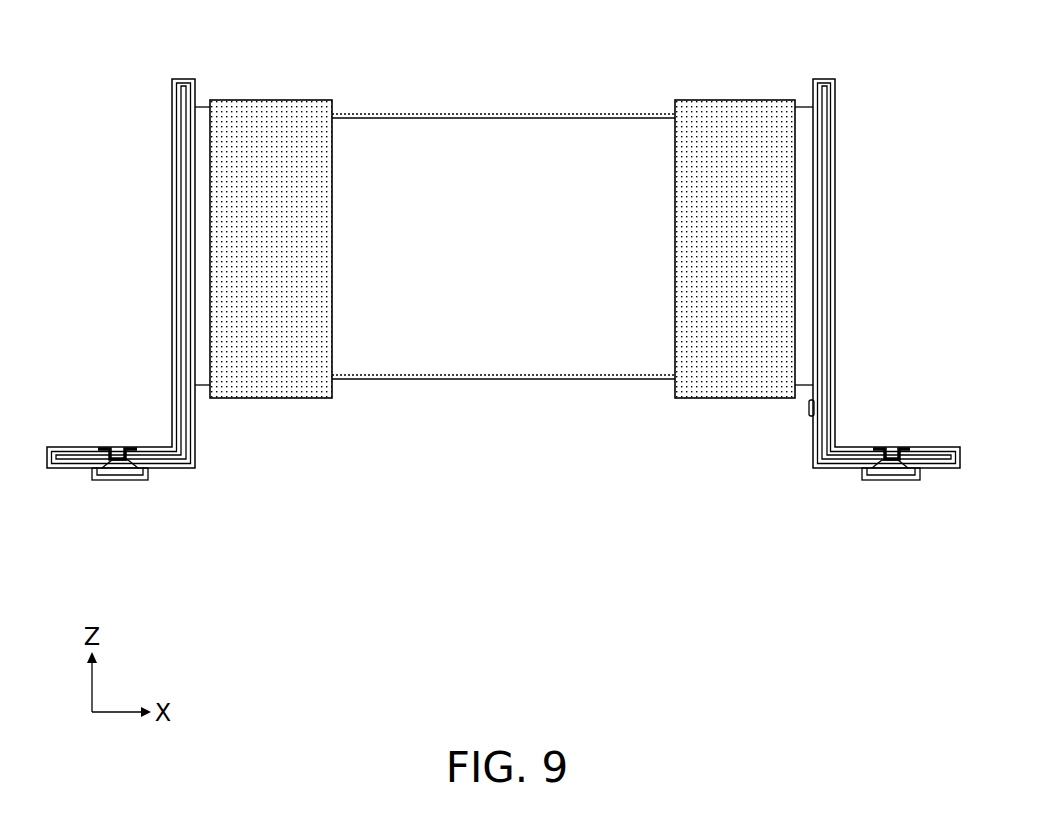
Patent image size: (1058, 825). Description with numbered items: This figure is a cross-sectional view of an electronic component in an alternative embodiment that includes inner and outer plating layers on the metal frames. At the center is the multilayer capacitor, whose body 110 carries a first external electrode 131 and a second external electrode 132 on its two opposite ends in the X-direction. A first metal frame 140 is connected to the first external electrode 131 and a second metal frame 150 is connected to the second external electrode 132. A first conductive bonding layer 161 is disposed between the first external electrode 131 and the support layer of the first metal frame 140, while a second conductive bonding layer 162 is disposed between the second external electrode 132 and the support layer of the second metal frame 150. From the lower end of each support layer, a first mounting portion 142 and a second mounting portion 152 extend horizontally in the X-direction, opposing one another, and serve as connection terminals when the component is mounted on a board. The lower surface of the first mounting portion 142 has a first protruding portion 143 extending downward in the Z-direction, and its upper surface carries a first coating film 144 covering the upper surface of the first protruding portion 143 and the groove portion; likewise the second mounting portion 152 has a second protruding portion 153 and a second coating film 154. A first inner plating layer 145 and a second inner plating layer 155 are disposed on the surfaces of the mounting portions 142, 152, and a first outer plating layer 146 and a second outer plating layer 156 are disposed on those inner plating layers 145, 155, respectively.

The body 110 is at (504, 112).
The first external electrode 131 is at (269, 88).
The second external electrode 132 is at (733, 88).
The first metal frame 140 is at (166, 347).
The first mounting portion 142 is at (128, 475).
The first protruding portion 143 is at (103, 472).
The first coating film 144 is at (110, 447).
The first inner plating layer 145 is at (176, 470).
The first outer plating layer 146 is at (195, 435).
The second metal frame 150 is at (841, 347).
The second mounting portion 152 is at (878, 478).
The second protruding portion 153 is at (905, 476).
The second coating film 154 is at (897, 447).
The second inner plating layer 155 is at (818, 470).
The second outer plating layer 156 is at (813, 432).
The first conductive bonding layer 161 is at (200, 197).
The second conductive bonding layer 162 is at (808, 197).